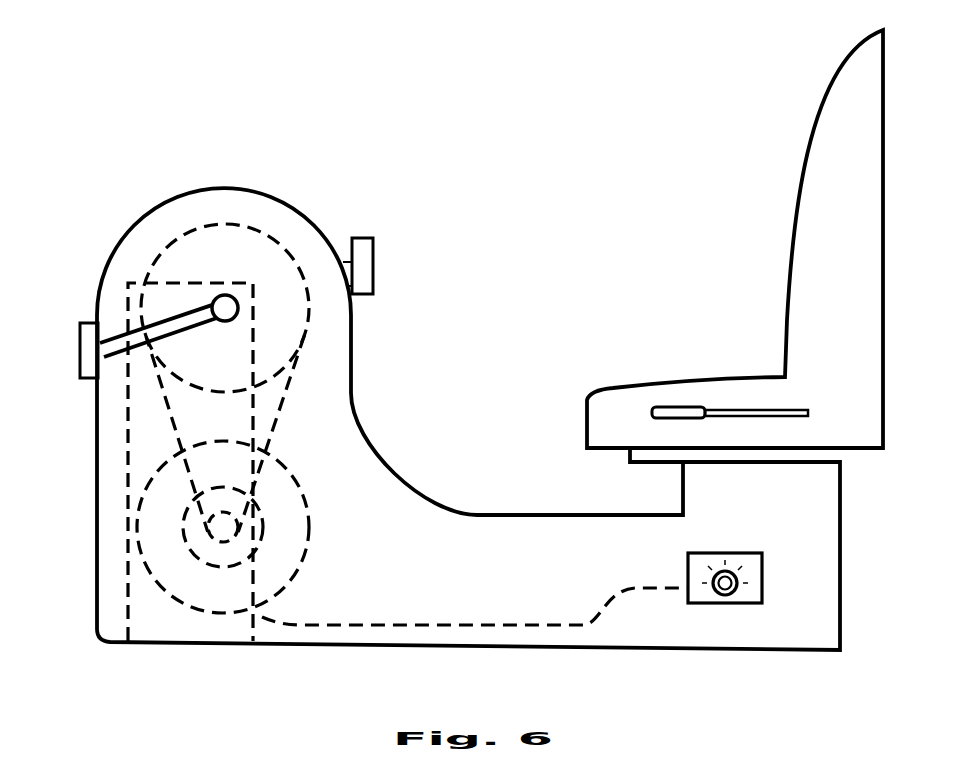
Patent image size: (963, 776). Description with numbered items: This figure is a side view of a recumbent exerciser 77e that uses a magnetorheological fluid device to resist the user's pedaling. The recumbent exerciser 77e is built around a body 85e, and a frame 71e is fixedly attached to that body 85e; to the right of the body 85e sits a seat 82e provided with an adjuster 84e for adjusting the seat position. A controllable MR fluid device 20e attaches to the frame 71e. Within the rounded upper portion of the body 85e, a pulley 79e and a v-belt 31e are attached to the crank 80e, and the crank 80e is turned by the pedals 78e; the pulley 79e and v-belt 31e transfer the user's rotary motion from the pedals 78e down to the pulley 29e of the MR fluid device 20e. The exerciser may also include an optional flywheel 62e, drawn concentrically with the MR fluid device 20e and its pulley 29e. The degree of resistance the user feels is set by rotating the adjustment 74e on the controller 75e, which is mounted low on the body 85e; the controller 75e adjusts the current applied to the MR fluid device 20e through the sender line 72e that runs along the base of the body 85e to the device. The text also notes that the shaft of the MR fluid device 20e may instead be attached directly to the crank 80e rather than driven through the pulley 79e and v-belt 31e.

The recumbent exerciser 77e is at (340, 180).
The body 85e is at (352, 388).
The frame 71e is at (125, 452).
The pulley 79e is at (209, 222).
The crank 80e is at (168, 330).
The pedals 78e is at (374, 262).
The v-belt 31e is at (278, 400).
The controllable MR fluid device 20e is at (283, 547).
The pulley 29e is at (268, 540).
The flywheel 62e is at (240, 527).
The sender line 72e is at (445, 623).
The adjustment 74e is at (762, 580).
The controller 75e is at (730, 572).
The seat 82e is at (793, 237).
The adjuster 84e is at (753, 410).